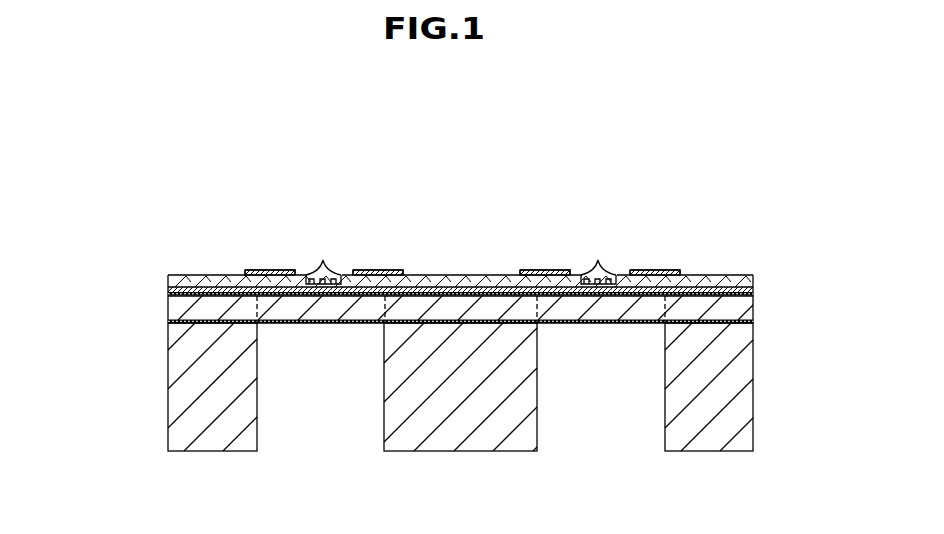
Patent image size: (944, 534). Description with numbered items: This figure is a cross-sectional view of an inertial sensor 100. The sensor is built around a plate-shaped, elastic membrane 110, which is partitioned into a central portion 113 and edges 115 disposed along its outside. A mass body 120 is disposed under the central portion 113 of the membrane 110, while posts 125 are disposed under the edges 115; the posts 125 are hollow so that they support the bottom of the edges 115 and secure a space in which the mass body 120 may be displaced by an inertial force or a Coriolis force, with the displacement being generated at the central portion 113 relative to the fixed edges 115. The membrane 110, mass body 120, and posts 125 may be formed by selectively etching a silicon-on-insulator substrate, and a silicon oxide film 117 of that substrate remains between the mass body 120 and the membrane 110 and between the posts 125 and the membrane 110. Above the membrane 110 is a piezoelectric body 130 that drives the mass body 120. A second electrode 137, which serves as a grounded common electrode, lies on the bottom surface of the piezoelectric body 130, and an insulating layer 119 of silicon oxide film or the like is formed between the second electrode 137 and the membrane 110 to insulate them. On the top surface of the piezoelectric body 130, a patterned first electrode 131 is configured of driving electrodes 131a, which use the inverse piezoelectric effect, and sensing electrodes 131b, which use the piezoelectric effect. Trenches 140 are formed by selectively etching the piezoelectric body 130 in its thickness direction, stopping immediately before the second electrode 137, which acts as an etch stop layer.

The inertial sensor 100 is at (175, 116).
The membrane 110 is at (156, 308).
The central portion of the membrane 113 is at (455, 312).
The edges of the membrane 115 is at (193, 308).
The silicon oxide film 117 is at (167, 321).
The insulating layer 119 is at (167, 295).
The mass body 120 is at (477, 408).
The posts 125 is at (213, 408).
The piezoelectric body 130 is at (743, 280).
The first electrode 131 is at (387, 195).
The driving electrodes 131a is at (376, 270).
The sensing electrodes 131b is at (275, 270).
The second electrode 137 is at (743, 292).
The trenches 140 is at (323, 259).